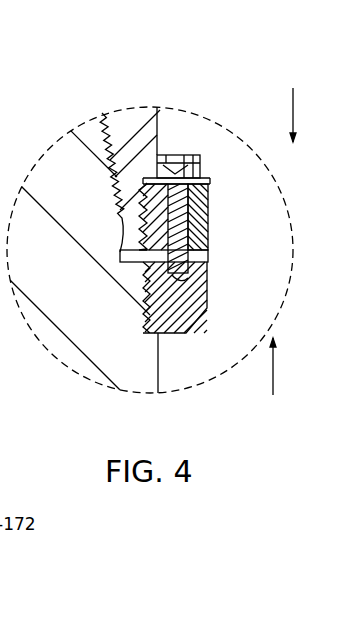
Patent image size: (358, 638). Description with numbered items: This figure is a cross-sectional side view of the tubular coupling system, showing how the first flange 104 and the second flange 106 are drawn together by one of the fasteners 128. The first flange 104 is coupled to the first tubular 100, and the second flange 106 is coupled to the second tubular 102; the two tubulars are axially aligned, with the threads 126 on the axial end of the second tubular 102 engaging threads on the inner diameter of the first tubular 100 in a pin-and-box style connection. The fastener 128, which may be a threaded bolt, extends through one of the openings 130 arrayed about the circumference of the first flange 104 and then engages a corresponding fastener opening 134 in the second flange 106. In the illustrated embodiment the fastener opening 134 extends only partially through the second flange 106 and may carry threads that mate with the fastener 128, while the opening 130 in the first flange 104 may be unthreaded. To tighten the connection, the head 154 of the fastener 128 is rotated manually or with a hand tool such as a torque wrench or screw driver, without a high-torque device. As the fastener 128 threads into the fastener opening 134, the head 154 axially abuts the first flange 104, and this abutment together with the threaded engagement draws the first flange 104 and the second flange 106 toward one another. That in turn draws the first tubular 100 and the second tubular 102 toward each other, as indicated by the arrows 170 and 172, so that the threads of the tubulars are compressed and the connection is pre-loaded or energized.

The first tubular 100 is at (150, 124).
The second tubular 102 is at (58, 177).
The first flange 104 is at (198, 212).
The second flange 106 is at (180, 308).
The threads 126 is at (115, 175).
The fastener 128 is at (200, 170).
The opening 130 is at (197, 227).
The fastener opening 134 is at (180, 280).
The head 154 is at (177, 156).
The arrow 170 is at (295, 110).
The arrow 172 is at (275, 372).